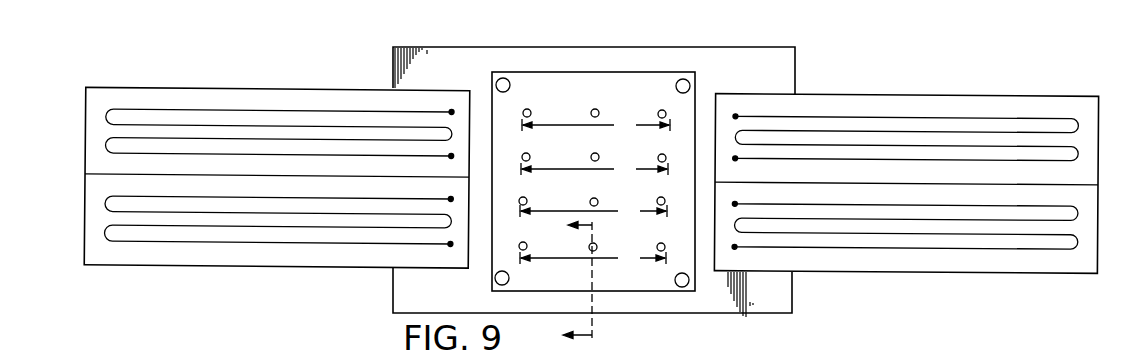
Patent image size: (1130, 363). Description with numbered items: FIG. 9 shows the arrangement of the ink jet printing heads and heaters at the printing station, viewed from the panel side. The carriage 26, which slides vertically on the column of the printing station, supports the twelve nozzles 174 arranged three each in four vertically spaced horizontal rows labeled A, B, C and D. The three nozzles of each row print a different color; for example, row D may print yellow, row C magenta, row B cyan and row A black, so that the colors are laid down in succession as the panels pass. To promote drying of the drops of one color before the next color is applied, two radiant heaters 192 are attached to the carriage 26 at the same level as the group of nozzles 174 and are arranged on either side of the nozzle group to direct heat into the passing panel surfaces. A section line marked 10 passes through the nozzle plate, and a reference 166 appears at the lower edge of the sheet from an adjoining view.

The carriage 26 is at (718, 58).
The radiant heater 192 is at (245, 105).
The nozzle 174 is at (660, 111).
The section line 10- 10 is at (603, 283).
The leader element (adjacent figure) 166 is at (762, 362).